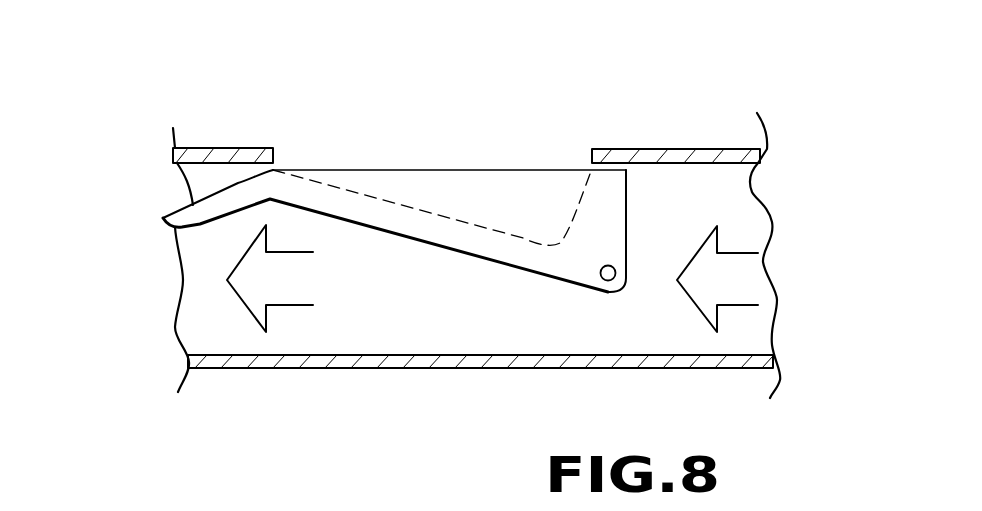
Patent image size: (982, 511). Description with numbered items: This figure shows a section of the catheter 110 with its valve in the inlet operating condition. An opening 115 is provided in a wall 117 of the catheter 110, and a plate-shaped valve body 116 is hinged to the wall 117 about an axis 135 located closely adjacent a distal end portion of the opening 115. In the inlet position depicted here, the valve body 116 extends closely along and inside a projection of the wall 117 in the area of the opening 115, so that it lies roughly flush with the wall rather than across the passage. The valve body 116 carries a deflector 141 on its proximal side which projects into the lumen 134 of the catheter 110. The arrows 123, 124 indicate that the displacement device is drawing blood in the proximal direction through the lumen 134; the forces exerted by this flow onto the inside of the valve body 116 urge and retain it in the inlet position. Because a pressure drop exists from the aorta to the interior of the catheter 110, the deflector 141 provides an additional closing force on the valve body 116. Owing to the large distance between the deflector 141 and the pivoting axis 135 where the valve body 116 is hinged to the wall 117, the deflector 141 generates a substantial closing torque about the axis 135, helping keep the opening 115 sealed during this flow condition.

The catheter 110 is at (383, 403).
The opening 115 is at (503, 160).
The valve body 116 is at (533, 257).
The wall 117 is at (727, 148).
The arrow 123 is at (743, 252).
The arrow 124 is at (242, 303).
The lumen 134 is at (455, 330).
The axis 135 is at (608, 265).
The deflector 141 is at (213, 200).